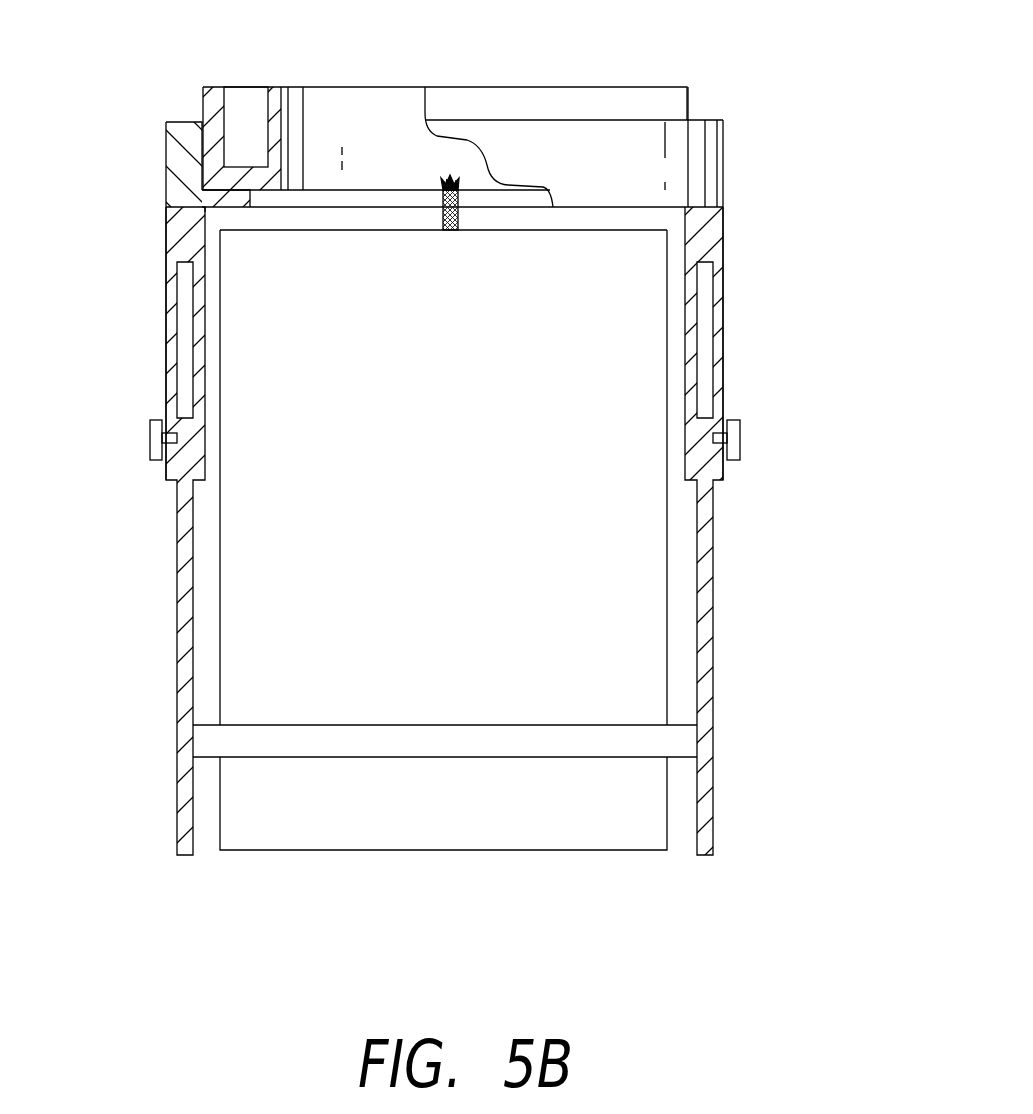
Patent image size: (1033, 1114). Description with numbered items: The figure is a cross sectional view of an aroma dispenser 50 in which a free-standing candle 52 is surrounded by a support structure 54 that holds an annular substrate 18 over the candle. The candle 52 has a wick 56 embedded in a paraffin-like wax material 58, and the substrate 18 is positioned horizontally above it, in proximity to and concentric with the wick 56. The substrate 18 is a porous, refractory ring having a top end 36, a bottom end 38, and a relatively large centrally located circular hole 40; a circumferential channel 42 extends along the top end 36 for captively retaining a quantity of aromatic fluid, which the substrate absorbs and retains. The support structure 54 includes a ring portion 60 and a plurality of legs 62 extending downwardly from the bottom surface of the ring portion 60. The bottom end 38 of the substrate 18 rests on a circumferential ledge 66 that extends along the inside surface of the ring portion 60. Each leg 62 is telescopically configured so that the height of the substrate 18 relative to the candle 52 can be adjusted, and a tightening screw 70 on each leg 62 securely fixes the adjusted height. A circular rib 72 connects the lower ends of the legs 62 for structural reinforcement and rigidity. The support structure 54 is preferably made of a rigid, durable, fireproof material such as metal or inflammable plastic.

The annular substrate 18 is at (688, 108).
The top end 36 is at (602, 87).
The bottom end 38 is at (244, 200).
The centrally located circular hole 40 is at (335, 87).
The circumferential channel 42 is at (250, 108).
The aroma dispenser 50 is at (782, 67).
The free-standing candle 52 is at (232, 568).
The support structure 54 is at (165, 205).
The wick 56 is at (440, 220).
The paraffin-like wax material 58 is at (283, 317).
The ring portion 60 is at (695, 157).
The legs 62 is at (167, 393).
The circumferential ledge 66 is at (222, 200).
The tightening screw 70 is at (150, 445).
The circular rib 72 is at (643, 737).